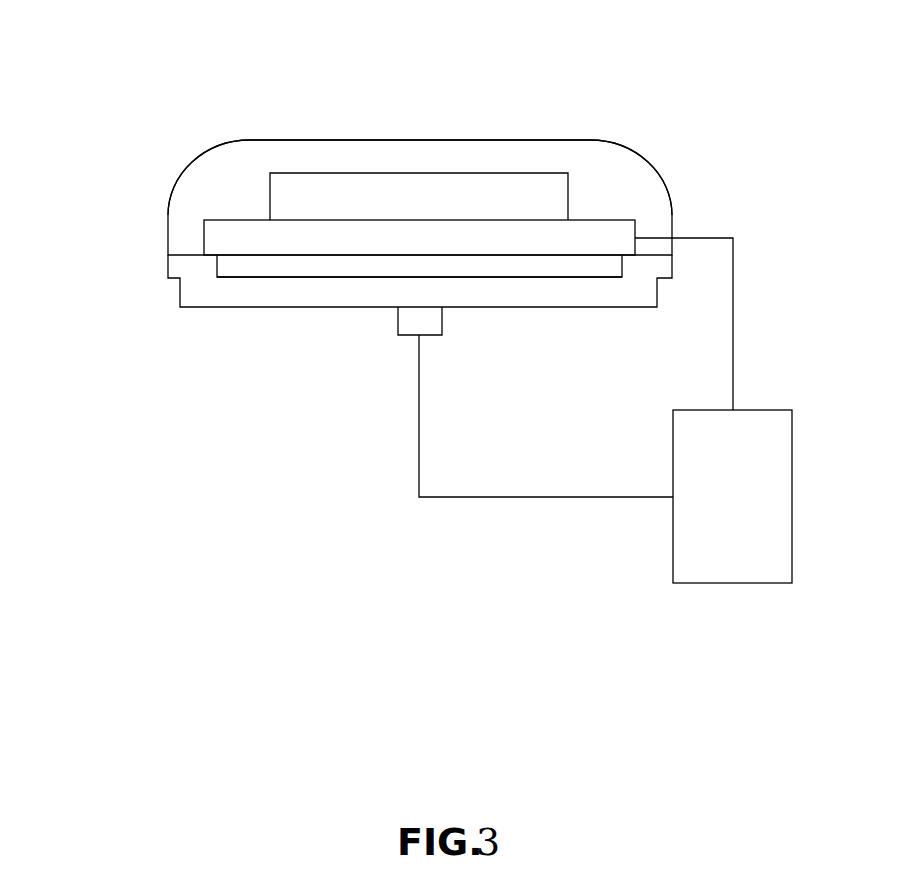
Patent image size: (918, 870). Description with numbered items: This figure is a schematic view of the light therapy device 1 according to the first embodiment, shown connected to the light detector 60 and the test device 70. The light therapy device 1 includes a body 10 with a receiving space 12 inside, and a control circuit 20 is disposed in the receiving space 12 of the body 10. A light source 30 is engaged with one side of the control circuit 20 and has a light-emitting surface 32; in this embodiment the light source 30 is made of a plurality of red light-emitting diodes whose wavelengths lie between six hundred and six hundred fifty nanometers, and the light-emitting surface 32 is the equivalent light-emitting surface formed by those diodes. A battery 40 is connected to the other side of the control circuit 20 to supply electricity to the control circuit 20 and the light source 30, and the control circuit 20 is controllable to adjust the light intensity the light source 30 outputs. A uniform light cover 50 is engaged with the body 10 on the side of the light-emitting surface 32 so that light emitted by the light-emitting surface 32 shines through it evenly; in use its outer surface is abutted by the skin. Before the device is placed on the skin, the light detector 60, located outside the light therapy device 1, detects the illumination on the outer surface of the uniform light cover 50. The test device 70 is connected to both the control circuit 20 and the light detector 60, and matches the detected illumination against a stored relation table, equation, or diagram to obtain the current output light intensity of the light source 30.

The light therapy device 1 is at (560, 113).
The body 10 is at (200, 157).
The receiving space 12 is at (253, 163).
The control circuit 20 is at (205, 237).
The light source 30 is at (227, 272).
The light-emitting surface 32 is at (265, 278).
The battery 40 is at (328, 192).
The uniform light cover 50 is at (537, 307).
The light detector 60 is at (412, 327).
The test device 70 is at (703, 520).